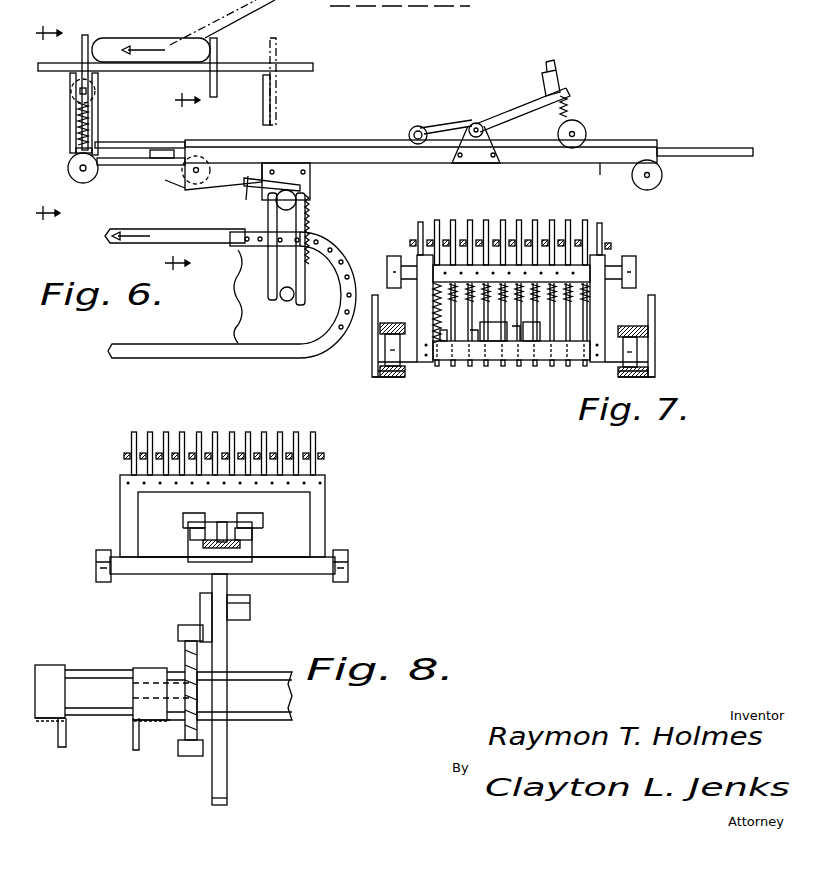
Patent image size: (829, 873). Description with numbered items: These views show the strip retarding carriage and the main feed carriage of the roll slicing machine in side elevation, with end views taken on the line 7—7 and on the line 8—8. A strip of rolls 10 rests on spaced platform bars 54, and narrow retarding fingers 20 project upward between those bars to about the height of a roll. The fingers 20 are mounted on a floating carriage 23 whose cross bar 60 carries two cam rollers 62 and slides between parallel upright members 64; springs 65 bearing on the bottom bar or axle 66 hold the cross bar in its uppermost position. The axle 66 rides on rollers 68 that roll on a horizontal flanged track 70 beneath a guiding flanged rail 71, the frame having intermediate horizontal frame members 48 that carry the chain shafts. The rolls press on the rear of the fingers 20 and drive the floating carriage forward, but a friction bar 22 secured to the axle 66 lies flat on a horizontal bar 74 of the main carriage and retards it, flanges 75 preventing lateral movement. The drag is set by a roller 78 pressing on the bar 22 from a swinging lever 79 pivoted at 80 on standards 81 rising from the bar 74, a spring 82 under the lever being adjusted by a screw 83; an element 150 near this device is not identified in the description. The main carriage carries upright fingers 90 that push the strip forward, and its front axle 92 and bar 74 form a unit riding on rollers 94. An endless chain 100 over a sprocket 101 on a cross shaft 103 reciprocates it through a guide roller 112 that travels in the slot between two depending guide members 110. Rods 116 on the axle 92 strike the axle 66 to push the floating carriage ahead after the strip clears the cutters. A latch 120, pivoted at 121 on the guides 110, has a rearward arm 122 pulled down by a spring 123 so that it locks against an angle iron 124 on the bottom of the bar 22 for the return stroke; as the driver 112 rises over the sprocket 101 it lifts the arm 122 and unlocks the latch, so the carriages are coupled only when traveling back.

In FIG. 6, the line 7— 7 is at (55, 118).
In FIG. 6, the line 8— 8 is at (186, 175).
In FIG. 6, the strip of rolls 10 is at (141, 38).
In FIG. 6, the retarding fingers 20 is at (87, 35).
In FIG. 7, the retarding fingers 20 is at (553, 222).
In FIG. 6, the friction bar 22 is at (117, 142).
In FIG. 7, the floating carriage 23 is at (518, 362).
In FIG. 8, the intermediate horizontal frame members 48 is at (133, 750).
In FIG. 7, the platform bars 54 is at (602, 242).
In FIG. 8, the platform bars 54 is at (322, 456).
In FIG. 7, the cross bar 60 is at (510, 264).
In FIG. 6, the cam rollers 62 is at (70, 92).
In FIG. 7, the cam rollers 62 is at (393, 256).
In FIG. 6, the upright members 64 is at (70, 115).
In FIG. 7, the upright members 64 is at (417, 300).
In FIG. 6, the springs 65 is at (78, 136).
In FIG. 7, the springs 65 is at (445, 342).
In FIG. 6, the axle 66 is at (76, 155).
In FIG. 7, the axle 66 is at (545, 360).
In FIG. 7, the rollers 68 is at (388, 368).
In FIG. 7, the flanged track 70 is at (405, 376).
In FIG. 7, the guiding flanged rail 71 is at (375, 350).
In FIG. 6, the horizontal bar 74 is at (337, 158).
In FIG. 8, the horizontal bar 74 is at (240, 562).
In FIG. 6, the flanges 75 is at (624, 152).
In FIG. 8, the flanges 75 is at (252, 538).
In FIG. 6, the roller 78 is at (418, 126).
In FIG. 8, the roller 78 is at (218, 520).
In FIG. 6, the swinging lever 79 is at (460, 124).
In FIG. 8, the swinging lever 79 is at (228, 518).
In FIG. 6, the pivot 80 is at (476, 123).
In FIG. 6, the standards 81 is at (481, 165).
In FIG. 8, the standards 81 is at (190, 537).
In FIG. 6, the spring 82 is at (570, 110).
In FIG. 6, the screw 83 is at (550, 62).
In FIG. 6, the fingers 90 is at (218, 49).
In FIG. 8, the fingers 90 is at (280, 432).
In FIG. 8, the front axle 92 is at (322, 575).
In FIG. 6, the rollers 94 is at (662, 176).
In FIG. 8, the rollers 94 is at (103, 550).
In FIG. 6, the endless chain 100 is at (118, 243).
In FIG. 8, the endless chain 100 is at (180, 628).
In FIG. 6, the sprocket 101 is at (232, 322).
In FIG. 8, the sprocket 101 is at (185, 656).
In FIG. 6, the cross shaft 103 is at (294, 294).
In FIG. 8, the cross shaft 103 is at (109, 683).
In FIG. 6, the guide members 110 is at (262, 306).
In FIG. 8, the guide members 110 is at (228, 750).
In FIG. 6, the guide roller 112 is at (308, 202).
In FIG. 8, the guide roller 112 is at (240, 620).
In FIG. 6, the rods 116 is at (148, 158).
In FIG. 6, the latch 120 is at (182, 186).
In FIG. 6, the pivot 121 is at (256, 194).
In FIG. 6, the lever arm 122 is at (300, 192).
In FIG. 6, the spring 123 is at (308, 214).
In FIG. 6, the angle iron 124 is at (162, 162).
In FIG. 6, the roller 150 is at (587, 129).